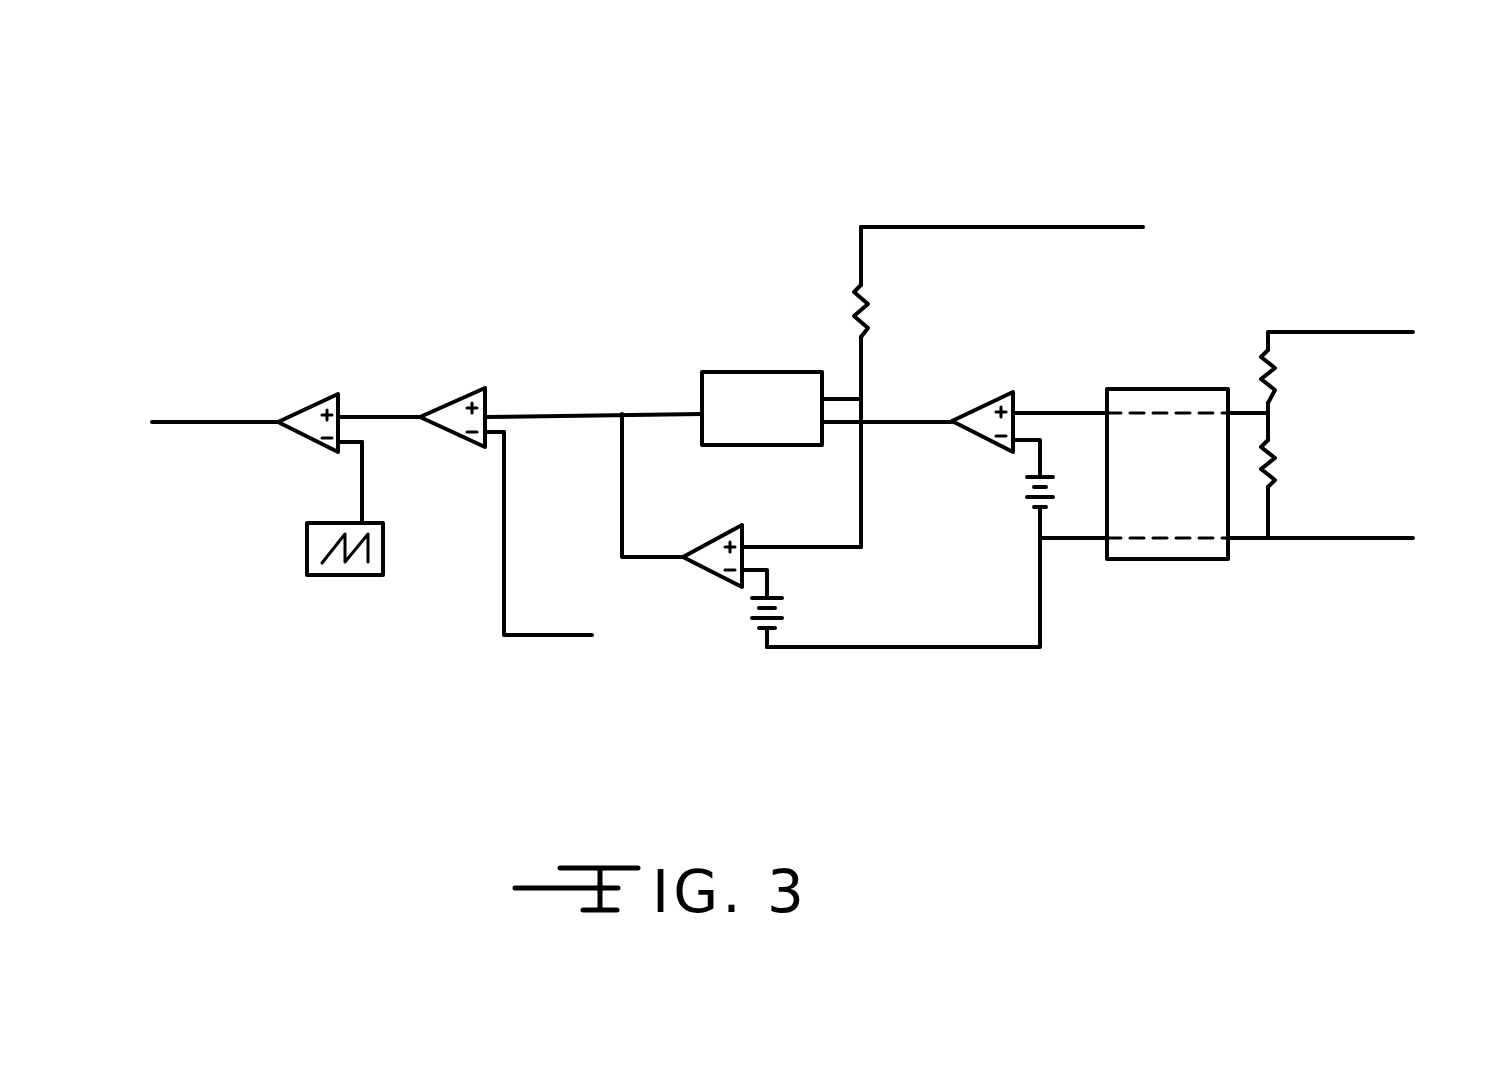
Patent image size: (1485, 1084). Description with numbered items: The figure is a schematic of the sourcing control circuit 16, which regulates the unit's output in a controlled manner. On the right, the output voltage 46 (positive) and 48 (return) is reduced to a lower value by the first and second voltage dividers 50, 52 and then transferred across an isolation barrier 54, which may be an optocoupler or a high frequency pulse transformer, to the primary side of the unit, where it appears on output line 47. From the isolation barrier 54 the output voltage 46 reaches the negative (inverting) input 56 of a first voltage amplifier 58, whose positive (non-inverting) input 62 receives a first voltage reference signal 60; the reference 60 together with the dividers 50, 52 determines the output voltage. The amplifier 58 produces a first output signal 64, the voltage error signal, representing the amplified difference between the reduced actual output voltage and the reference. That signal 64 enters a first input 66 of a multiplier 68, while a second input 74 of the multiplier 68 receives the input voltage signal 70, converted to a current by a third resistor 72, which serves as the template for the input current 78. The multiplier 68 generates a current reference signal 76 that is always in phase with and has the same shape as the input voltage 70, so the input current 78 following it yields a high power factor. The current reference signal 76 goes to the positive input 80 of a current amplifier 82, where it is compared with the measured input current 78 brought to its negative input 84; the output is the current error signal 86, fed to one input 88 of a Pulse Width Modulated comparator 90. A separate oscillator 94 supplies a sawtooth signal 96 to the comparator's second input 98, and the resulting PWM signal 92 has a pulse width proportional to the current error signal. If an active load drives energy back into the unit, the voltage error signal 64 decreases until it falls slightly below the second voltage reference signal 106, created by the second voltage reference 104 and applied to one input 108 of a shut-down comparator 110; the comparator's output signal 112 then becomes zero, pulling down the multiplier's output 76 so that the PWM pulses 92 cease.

The sourcing control circuit 16 is at (522, 185).
The output voltage (positive) 46 is at (1242, 413).
The output line 47 is at (1068, 410).
The output voltage (return) 48 is at (1385, 538).
The first voltage divider 50 is at (1275, 378).
The second voltage divider 52 is at (1273, 462).
The isolation barrier 54 is at (1135, 390).
The negative (inverting) input 56 is at (1017, 410).
The first voltage amplifier 58 is at (985, 402).
The first voltage reference signal 60 is at (1018, 441).
The positive (non-inverting) input 62 is at (1012, 452).
The first output signal (voltage error signal) 64 is at (910, 420).
The first input of multiplier 66 is at (823, 422).
The multiplier 68 is at (755, 370).
The input voltage signal 70 is at (1053, 226).
The third resistor 72 is at (866, 291).
The second input of multiplier 74 is at (826, 396).
The current reference signal 76 is at (598, 412).
The input current 78 is at (530, 637).
The positive input of current amplifier 80 is at (487, 412).
The current amplifier 82 is at (440, 405).
The negative input of current amplifier 84 is at (490, 448).
The current error signal 86 is at (388, 417).
The input of PWM comparator 88 is at (337, 394).
The Pulse Width Modulated comparator 90 is at (292, 430).
The Pulse Width Modulated signal 92 is at (222, 420).
The oscillator 94 is at (355, 577).
The sawtooth signal 96 is at (355, 506).
The second input of PWM comparator 98 is at (340, 452).
The second voltage reference 104 is at (783, 615).
The second voltage reference signal 106 is at (762, 588).
The input of shut-down comparator 108 is at (745, 546).
The shut-down comparator 110 is at (710, 540).
The output signal of shut-down comparator 112 is at (640, 557).